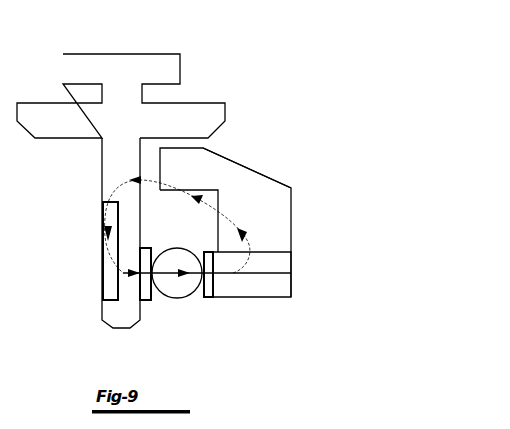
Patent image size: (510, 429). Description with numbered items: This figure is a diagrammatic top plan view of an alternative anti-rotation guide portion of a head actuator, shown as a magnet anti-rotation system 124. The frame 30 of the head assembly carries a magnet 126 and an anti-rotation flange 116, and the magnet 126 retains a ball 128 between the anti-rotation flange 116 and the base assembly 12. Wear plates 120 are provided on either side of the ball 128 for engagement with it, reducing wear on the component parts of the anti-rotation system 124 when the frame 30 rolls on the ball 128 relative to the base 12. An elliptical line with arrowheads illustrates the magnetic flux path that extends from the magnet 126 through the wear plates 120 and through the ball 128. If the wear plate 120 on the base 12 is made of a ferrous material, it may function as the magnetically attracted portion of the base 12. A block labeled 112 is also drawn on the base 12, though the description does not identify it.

The frame 30 is at (222, 112).
The anti-rotation flange 116 is at (103, 181).
The magnet 126 is at (107, 286).
The base assembly 12 is at (282, 216).
The magnet anti-rotation system 124 is at (253, 182).
The outlet block 112 is at (282, 288).
The wear plate 120 is at (149, 257).
The ball 128 is at (167, 298).